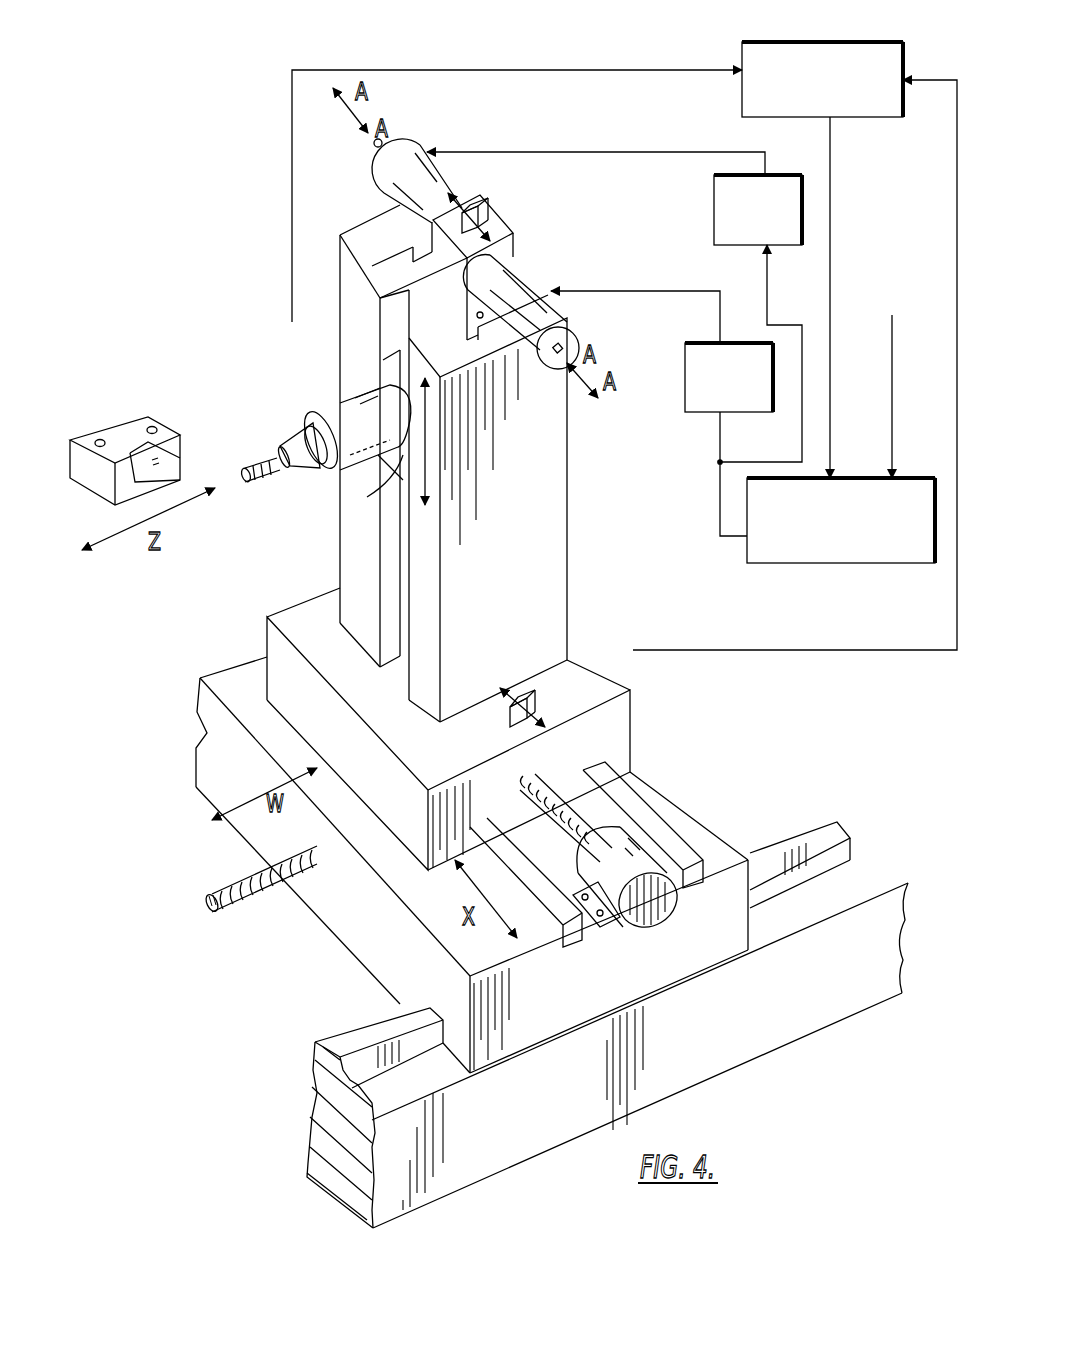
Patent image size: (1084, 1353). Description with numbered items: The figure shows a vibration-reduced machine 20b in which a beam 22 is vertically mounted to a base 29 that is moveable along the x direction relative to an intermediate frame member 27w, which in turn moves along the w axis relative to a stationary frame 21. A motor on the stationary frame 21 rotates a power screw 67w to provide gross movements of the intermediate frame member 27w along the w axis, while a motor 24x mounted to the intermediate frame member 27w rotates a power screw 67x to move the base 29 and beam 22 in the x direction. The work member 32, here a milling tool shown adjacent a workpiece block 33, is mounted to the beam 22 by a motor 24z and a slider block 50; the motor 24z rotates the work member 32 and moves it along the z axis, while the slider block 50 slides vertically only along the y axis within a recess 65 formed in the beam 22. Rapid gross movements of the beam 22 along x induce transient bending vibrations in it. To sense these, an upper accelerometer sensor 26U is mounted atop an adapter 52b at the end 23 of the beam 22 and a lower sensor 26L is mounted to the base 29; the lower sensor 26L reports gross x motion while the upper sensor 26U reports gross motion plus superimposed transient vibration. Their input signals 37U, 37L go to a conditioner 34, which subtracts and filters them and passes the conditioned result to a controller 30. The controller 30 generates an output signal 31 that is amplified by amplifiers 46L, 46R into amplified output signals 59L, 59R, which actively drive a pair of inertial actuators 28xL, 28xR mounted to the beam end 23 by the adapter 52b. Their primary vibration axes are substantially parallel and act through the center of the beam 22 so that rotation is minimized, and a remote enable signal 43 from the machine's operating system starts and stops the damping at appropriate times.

The vibration-reduced machine 20b is at (205, 250).
The stationary frame 21 is at (852, 873).
The beam 22 is at (567, 467).
The end 23 is at (548, 262).
The motor 24x is at (655, 915).
The motor 24z is at (340, 410).
The lower sensor 26L is at (505, 708).
The upper accelerometer sensor 26U is at (482, 212).
The intermediate frame member 27w is at (677, 780).
The inertial actuator 28xL is at (422, 152).
The inertial actuator 28xR is at (572, 332).
The base 29 is at (580, 642).
The controller 30 is at (808, 565).
The output signal 31 is at (717, 493).
The work member 32 is at (258, 450).
The workpiece 33 is at (120, 423).
The conditioner 34 is at (800, 42).
The input signal 37L is at (797, 652).
The input signal 37U is at (515, 70).
The remote enable signal 43 is at (893, 358).
The amplifier 46L is at (714, 200).
The amplifier 46R is at (685, 378).
The slider block 50 is at (367, 497).
The adapter 52b is at (510, 235).
The amplified output signal 59L is at (641, 152).
The amplified output signal 59R is at (640, 291).
The recess 65 is at (395, 565).
The power screw 67w is at (275, 885).
The power screw 67x is at (587, 812).